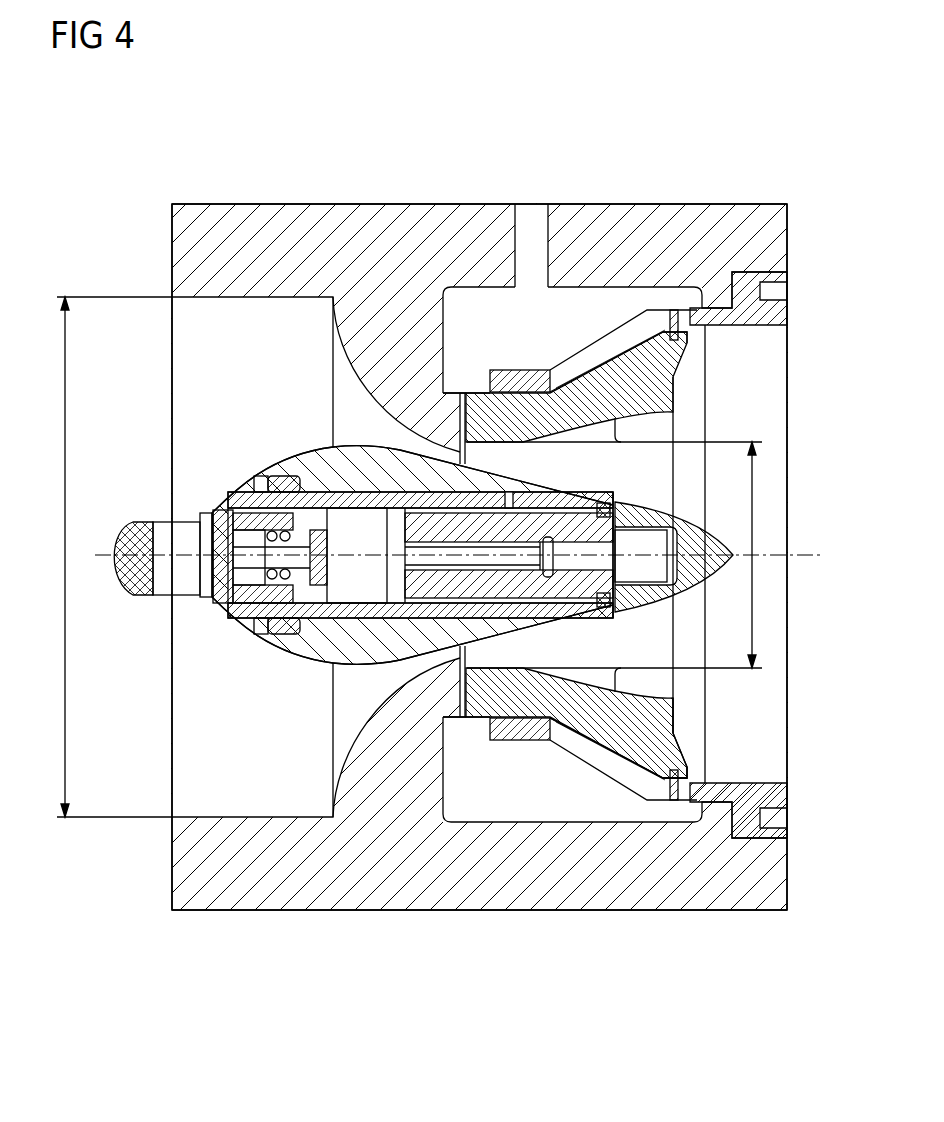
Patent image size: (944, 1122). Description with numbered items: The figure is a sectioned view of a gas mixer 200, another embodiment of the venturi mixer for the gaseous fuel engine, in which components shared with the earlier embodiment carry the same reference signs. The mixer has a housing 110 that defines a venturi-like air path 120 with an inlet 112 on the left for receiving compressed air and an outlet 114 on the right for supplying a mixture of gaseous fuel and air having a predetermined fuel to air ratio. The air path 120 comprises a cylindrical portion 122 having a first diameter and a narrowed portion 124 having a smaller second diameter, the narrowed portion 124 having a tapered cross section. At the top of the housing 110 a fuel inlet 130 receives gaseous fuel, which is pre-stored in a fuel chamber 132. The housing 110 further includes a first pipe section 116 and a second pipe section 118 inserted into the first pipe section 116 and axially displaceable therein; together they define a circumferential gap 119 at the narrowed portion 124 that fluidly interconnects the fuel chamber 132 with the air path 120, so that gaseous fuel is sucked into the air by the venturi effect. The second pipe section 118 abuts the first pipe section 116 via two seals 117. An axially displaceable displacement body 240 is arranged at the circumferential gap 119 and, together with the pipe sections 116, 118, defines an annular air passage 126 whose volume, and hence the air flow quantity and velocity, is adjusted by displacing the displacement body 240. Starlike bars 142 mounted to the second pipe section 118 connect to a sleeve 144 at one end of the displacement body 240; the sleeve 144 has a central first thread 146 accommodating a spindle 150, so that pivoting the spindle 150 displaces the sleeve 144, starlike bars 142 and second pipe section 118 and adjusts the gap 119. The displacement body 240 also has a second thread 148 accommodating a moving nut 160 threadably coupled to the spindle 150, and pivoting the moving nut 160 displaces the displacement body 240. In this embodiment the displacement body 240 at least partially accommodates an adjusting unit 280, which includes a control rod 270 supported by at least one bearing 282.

The gas mixer 200 is at (130, 160).
The housing 110 is at (172, 247).
The inlet 112 is at (172, 718).
The outlet 114 is at (787, 650).
The first pipe section 116 is at (300, 912).
The seals 117 is at (518, 360).
The second pipe section 118 is at (705, 776).
The circumferential gap 119 is at (466, 392).
The air path 120 is at (185, 395).
The cylindrical portion 122 is at (243, 300).
The narrowed portion 124 is at (447, 446).
The air passage 126 is at (415, 440).
The fuel inlet 130 is at (533, 203).
The fuel chamber 132 is at (585, 305).
The starlike bars 142 is at (662, 432).
The sleeve 144 is at (578, 515).
The first thread 146 is at (592, 600).
The second thread 148 is at (300, 620).
The spindle 150 is at (507, 618).
The moving nut 160 is at (355, 595).
The displacement body 240 is at (300, 450).
The control rod 270 is at (245, 603).
The adjusting unit 280 is at (140, 592).
The bearing 282 is at (238, 490).